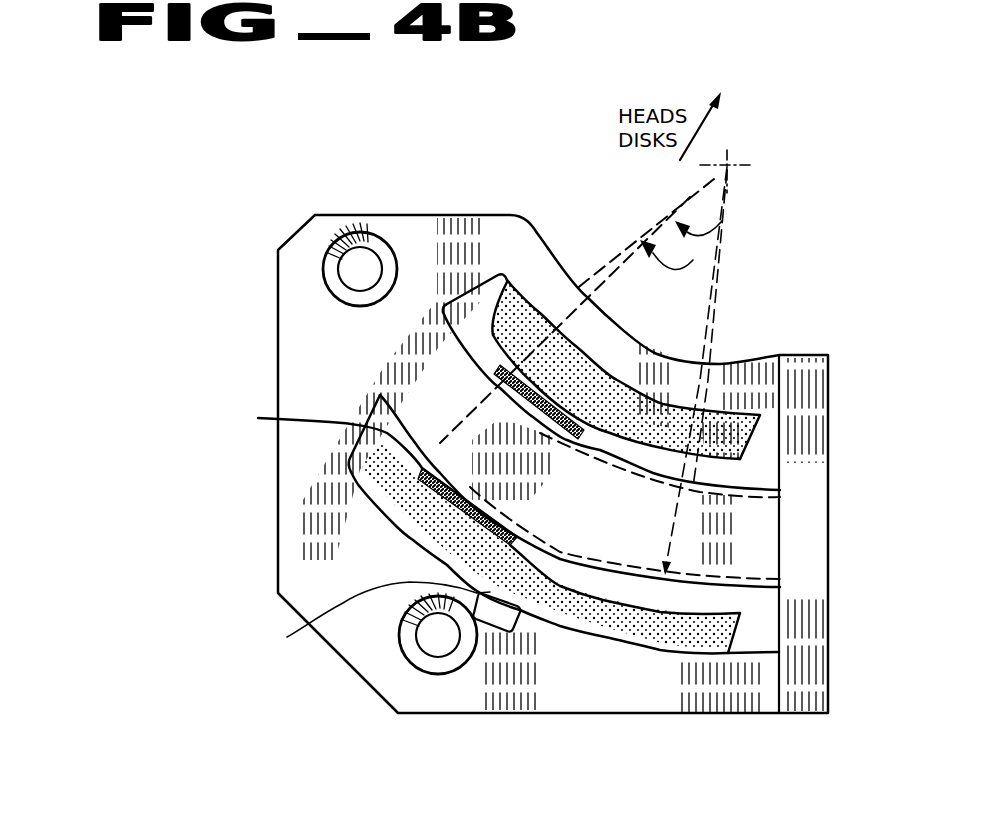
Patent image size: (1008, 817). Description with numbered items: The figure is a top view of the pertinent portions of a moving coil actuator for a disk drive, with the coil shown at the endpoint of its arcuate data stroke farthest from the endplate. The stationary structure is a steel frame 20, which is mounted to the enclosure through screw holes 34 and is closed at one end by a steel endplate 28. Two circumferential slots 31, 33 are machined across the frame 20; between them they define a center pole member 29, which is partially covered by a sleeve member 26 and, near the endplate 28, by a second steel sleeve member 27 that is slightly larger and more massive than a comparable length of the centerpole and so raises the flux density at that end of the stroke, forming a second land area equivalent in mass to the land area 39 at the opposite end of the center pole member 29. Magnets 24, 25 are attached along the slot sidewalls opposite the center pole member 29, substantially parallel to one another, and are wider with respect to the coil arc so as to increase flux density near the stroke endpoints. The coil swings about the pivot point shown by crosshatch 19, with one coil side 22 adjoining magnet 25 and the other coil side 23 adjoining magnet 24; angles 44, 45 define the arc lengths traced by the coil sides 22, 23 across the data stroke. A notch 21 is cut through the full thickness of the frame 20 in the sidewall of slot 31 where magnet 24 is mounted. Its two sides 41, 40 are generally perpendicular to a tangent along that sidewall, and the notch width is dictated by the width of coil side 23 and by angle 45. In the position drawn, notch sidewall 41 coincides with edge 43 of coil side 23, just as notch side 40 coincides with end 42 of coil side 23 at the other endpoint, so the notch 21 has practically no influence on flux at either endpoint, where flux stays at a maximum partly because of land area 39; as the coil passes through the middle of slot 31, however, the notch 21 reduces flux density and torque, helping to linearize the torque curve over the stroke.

The pivot point 19 is at (728, 170).
The steel frame 20 is at (278, 366).
The notch 21 is at (497, 612).
The coil side 22 is at (553, 390).
The coil side 23 is at (426, 476).
The magnet 24 is at (693, 487).
The magnet 25 is at (580, 356).
The sleeve member 26 is at (541, 540).
The second sleeve member 27 is at (753, 547).
The steel endplate 28 is at (829, 492).
The center pole member 29 is at (611, 481).
The slot 31 is at (718, 602).
The slot 33 is at (705, 473).
The screw holes 34 is at (367, 258).
The land area 39 is at (456, 300).
The notch side 40 is at (512, 612).
The notch sidewall 41 is at (372, 617).
The end of coil side 42 is at (371, 471).
The edge of coil side 43 is at (513, 545).
The angle 44 is at (693, 260).
The angle 45 is at (722, 221).